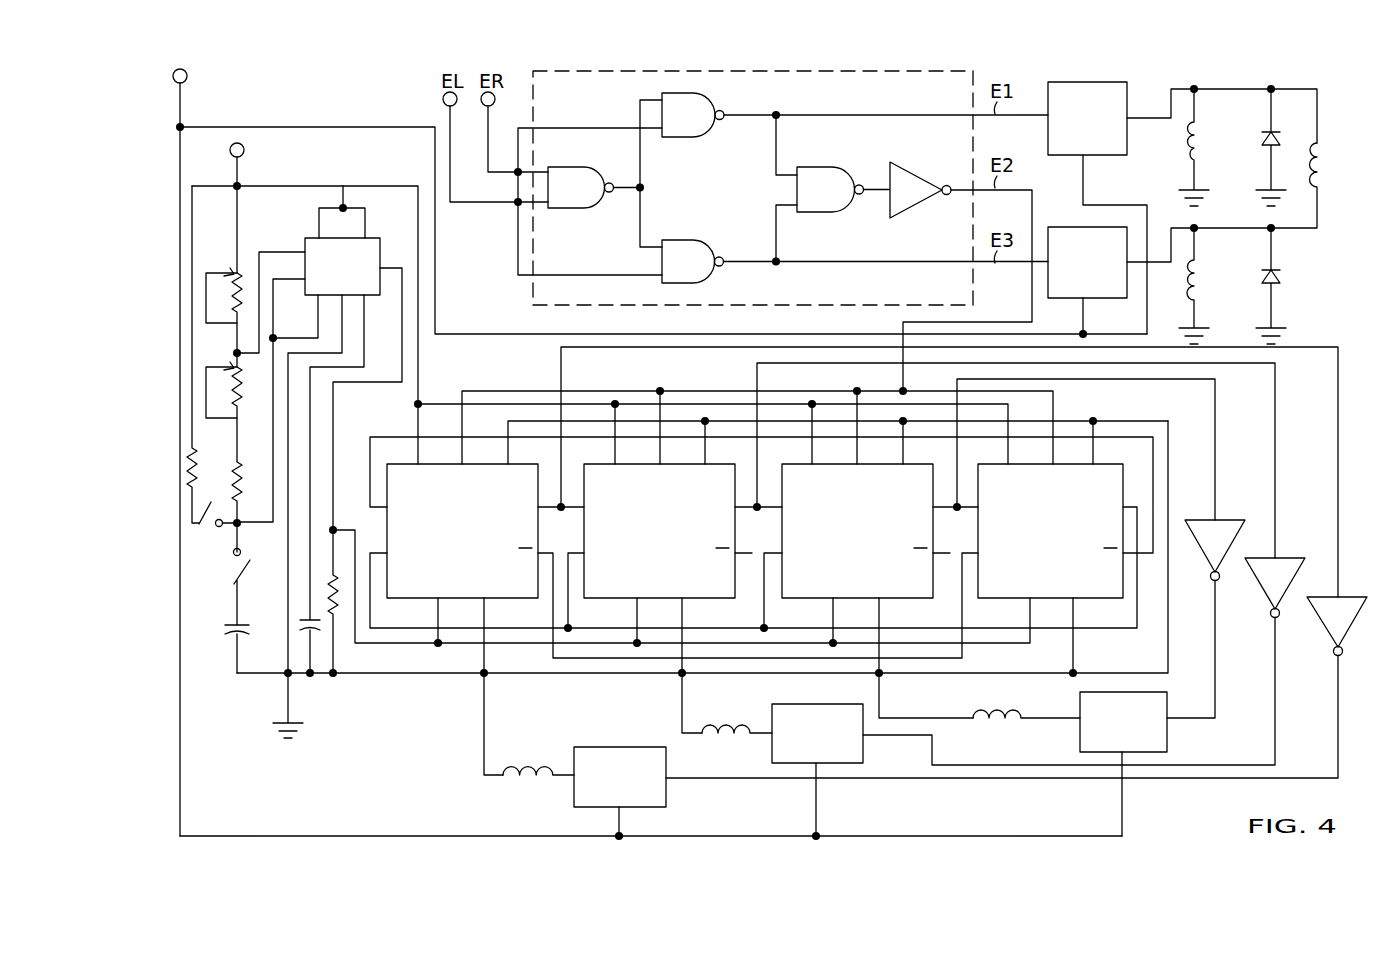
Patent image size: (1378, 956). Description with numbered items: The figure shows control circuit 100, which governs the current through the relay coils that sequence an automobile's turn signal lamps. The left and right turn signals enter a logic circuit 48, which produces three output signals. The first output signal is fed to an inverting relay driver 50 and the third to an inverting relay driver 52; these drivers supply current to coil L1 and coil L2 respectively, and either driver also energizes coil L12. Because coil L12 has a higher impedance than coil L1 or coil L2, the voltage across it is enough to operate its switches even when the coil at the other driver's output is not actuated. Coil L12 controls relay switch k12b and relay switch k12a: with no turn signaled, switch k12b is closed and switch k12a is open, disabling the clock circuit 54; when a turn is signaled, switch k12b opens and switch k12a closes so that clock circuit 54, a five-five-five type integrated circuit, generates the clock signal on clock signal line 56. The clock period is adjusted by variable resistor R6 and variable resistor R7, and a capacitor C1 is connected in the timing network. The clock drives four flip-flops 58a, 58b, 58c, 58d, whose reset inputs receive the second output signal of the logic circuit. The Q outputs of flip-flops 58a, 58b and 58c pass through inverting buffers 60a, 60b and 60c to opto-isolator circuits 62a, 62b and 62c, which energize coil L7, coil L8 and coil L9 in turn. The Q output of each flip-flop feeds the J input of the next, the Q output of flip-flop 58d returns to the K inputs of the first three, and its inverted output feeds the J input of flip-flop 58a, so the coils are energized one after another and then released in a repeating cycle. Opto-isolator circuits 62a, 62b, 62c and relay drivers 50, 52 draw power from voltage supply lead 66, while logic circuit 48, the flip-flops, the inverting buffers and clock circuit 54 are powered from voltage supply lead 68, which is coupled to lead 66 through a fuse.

The voltage supply lead 66 is at (184, 90).
The voltage supply lead 68 is at (241, 160).
The clock circuit 54 is at (380, 282).
The variable resistor R6 is at (232, 272).
The variable resistor R7 is at (232, 372).
The relay switch k12b is at (195, 530).
The relay switch k12a is at (262, 587).
The capacitor C1 is at (228, 645).
The clock signal line 56 is at (341, 528).
The logic circuit 48 is at (900, 104).
The relay driver 50 is at (1101, 158).
The relay driver 52 is at (1100, 302).
The coil L1 is at (1203, 139).
The coil L2 is at (1203, 277).
The coil L12 is at (1325, 164).
The control circuit 100 is at (1315, 329).
The flip-flop 58a is at (508, 600).
The flip-flop 58b is at (705, 600).
The flip-flop 58c is at (903, 600).
The flip-flop 58d is at (1098, 600).
The inverting buffer 60a is at (1328, 626).
The inverting buffer 60b is at (1265, 588).
The inverting buffer 60c is at (1205, 550).
The coil L7 is at (525, 766).
The coil L8 is at (730, 722).
The coil L9 is at (1000, 707).
The opto-isolator circuit 62a is at (666, 790).
The opto-isolator circuit 62b is at (863, 748).
The opto-isolator circuit 62c is at (1167, 736).